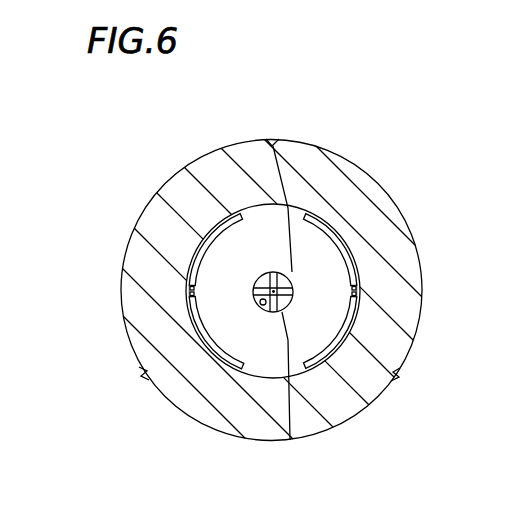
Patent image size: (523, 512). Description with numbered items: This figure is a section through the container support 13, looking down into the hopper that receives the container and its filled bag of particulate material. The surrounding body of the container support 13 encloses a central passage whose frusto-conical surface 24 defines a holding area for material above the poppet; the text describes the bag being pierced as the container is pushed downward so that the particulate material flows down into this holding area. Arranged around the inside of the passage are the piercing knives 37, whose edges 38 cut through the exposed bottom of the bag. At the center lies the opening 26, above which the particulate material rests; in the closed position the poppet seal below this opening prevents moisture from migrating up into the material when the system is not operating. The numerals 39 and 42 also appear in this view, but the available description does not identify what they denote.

The container support 13 is at (365, 182).
The frusto-conical surface 24 is at (270, 346).
The opening 26 is at (258, 307).
The piercing knives 37 is at (192, 330).
The edges 38 is at (188, 278).
The ring end tabs 39 is at (197, 290).
The wire 42 is at (272, 141).